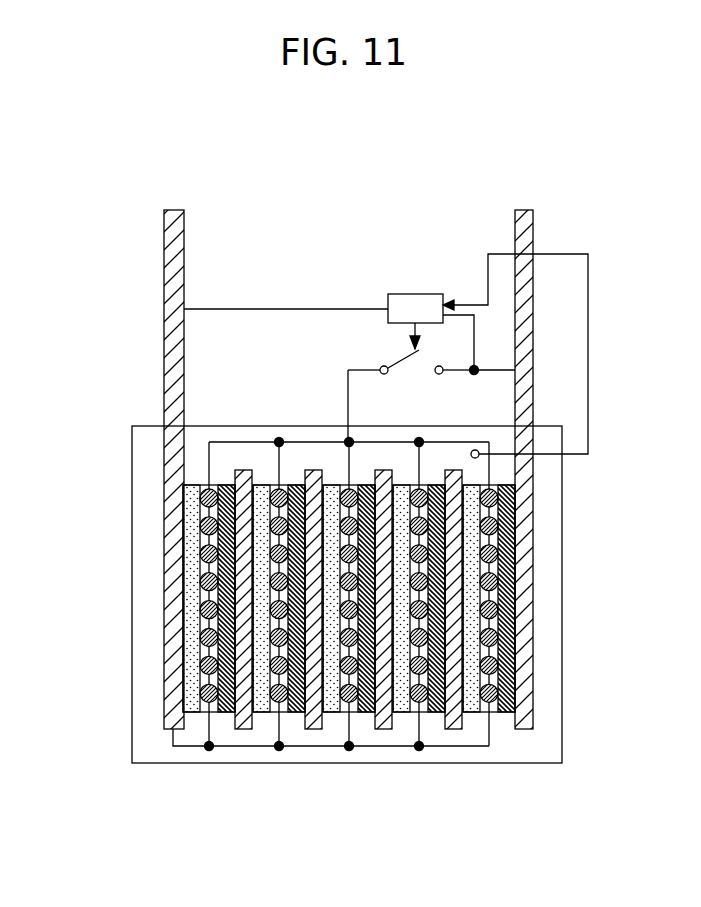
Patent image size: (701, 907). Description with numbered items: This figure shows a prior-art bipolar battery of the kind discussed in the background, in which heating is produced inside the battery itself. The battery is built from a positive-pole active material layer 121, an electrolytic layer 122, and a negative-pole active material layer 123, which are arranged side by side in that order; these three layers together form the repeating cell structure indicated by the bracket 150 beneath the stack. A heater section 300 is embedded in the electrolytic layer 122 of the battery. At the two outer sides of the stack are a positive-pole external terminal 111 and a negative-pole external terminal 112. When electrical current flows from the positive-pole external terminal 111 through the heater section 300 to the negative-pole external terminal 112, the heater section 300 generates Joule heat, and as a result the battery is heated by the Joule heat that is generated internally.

The positive-pole external terminal 111 is at (174, 213).
The negative-pole external terminal 112 is at (522, 213).
The positive-pole active material layer 121 is at (197, 705).
The electrolytic layer 122 is at (208, 705).
The negative-pole active material layer 123 is at (227, 712).
The unit cell 150 is at (287, 848).
The heater section 300 is at (281, 647).